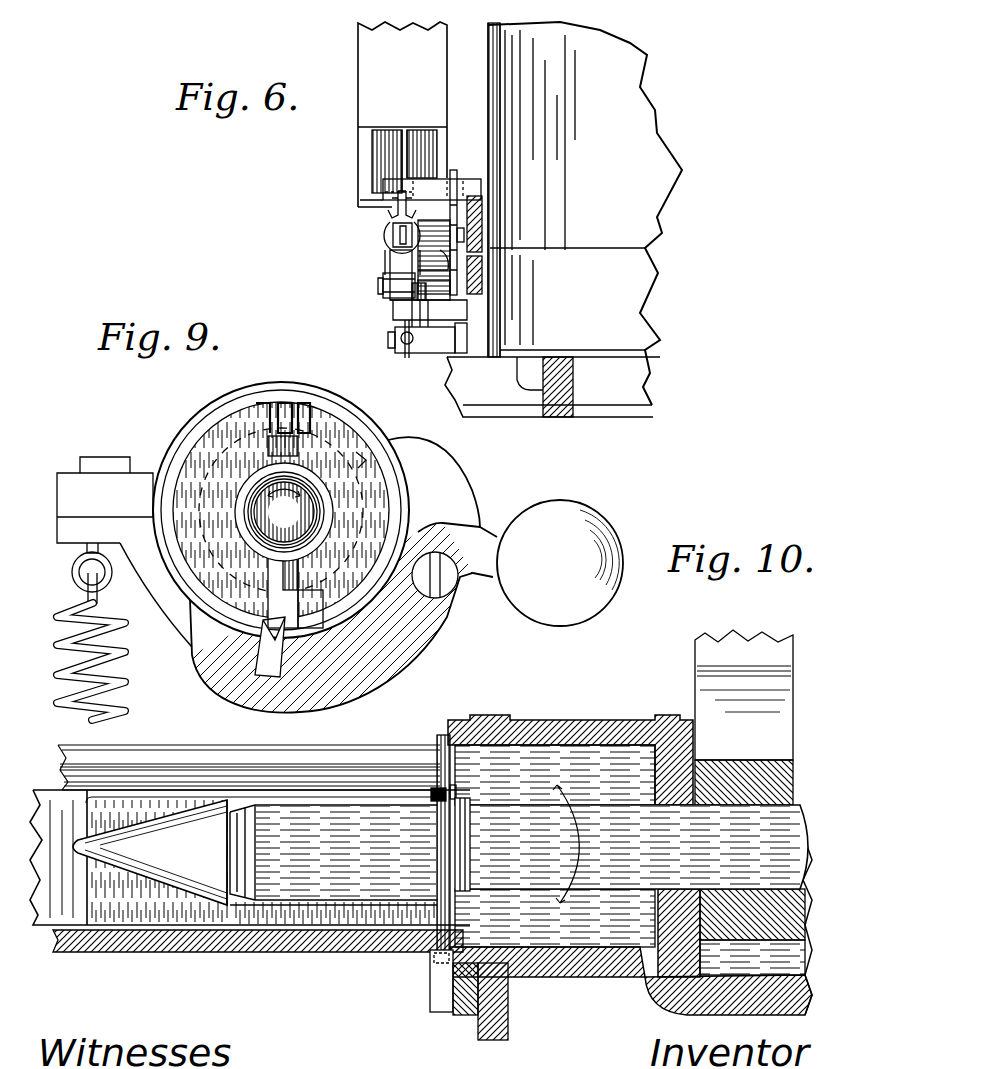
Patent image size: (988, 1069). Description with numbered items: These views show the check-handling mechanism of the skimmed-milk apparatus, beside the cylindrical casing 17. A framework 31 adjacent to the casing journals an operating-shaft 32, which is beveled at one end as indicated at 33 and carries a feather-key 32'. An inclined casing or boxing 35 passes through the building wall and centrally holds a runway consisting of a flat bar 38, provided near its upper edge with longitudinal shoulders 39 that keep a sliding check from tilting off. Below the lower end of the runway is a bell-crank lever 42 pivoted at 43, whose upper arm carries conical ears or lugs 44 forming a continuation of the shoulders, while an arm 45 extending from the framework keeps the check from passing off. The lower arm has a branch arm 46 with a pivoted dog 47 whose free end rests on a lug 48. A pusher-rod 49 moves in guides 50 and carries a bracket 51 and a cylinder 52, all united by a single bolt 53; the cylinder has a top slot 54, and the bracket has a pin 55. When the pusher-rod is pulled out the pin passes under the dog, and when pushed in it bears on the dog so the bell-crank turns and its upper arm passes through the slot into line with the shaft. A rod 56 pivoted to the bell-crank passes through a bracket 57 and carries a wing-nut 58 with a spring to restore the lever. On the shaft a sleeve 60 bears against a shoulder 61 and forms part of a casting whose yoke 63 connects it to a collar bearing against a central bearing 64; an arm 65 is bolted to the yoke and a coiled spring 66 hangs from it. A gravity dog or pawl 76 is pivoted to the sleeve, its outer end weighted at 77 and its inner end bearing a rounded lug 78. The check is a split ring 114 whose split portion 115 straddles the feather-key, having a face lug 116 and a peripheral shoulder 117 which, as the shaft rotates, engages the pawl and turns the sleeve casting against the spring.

In FIG. 6, the casing 17 is at (650, 110).
In FIG. 6, the framework 31 is at (482, 223).
In FIG. 9, the operating-shaft 32 is at (284, 512).
In FIG. 10, the operating-shaft 32 is at (631, 844).
In FIG. 9, the feather-key 32' is at (263, 591).
In FIG. 10, the feather-key 32' is at (332, 896).
In FIG. 9, the beveled extremity 33 is at (240, 520).
In FIG. 10, the beveled extremity 33 is at (250, 843).
In FIG. 6, the casing or boxing 35 is at (357, 82).
In FIG. 6, the runway 38 is at (402, 152).
In FIG. 6, the longitudinal shoulders 39 is at (395, 138).
In FIG. 6, the bell-crank lever 42 is at (390, 313).
In FIG. 10, the bell-crank lever 42 is at (107, 907).
In FIG. 6, the pivot 43 is at (380, 288).
In FIG. 6, the conical ears or lugs 44 is at (393, 240).
In FIG. 10, the conical ears or lugs 44 is at (150, 852).
In FIG. 6, the arm 45 is at (420, 187).
In FIG. 6, the branch arm 46 is at (390, 295).
In FIG. 6, the dog 47 is at (413, 302).
In FIG. 6, the lug 48 is at (420, 353).
In FIG. 6, the pusher-rod 49 is at (455, 245).
In FIG. 6, the guides 50 is at (470, 220).
In FIG. 6, the bracket 51 is at (440, 260).
In FIG. 6, the cylinder 52 is at (383, 233).
In FIG. 10, the cylinder 52 is at (303, 947).
In FIG. 6, the bolt 53 is at (463, 238).
In FIG. 6, the slot 54 is at (393, 212).
In FIG. 10, the slot 54 is at (283, 760).
In FIG. 6, the pin 55 is at (427, 300).
In FIG. 6, the rod 56 is at (400, 350).
In FIG. 6, the bracket 57 is at (435, 343).
In FIG. 6, the wing-nut 58 is at (407, 358).
In FIG. 9, the sleeve 60 is at (240, 388).
In FIG. 10, the sleeve 60 is at (553, 720).
In FIG. 10, the shoulder 61 is at (467, 828).
In FIG. 9, the yoke 63 is at (156, 606).
In FIG. 10, the yoke 63 is at (735, 1008).
In FIG. 10, the central bearing 64 is at (780, 777).
In FIG. 9, the arm 65 is at (135, 478).
In FIG. 9, the coiled spring 66 is at (125, 710).
In FIG. 9, the gravity dog or pawl 76 is at (393, 643).
In FIG. 10, the gravity dog or pawl 76 is at (460, 1012).
In FIG. 9, the weight 77 is at (617, 585).
In FIG. 9, the lug 78 is at (260, 640).
In FIG. 10, the lug 78 is at (430, 970).
In FIG. 9, the split ring 114 is at (383, 497).
In FIG. 10, the split ring 114 is at (432, 735).
In FIG. 9, the split portion 115 is at (283, 600).
In FIG. 9, the lug 116 is at (287, 452).
In FIG. 10, the lug 116 is at (430, 797).
In FIG. 9, the shoulder 117 is at (366, 460).
In FIG. 10, the shoulder 117 is at (453, 783).